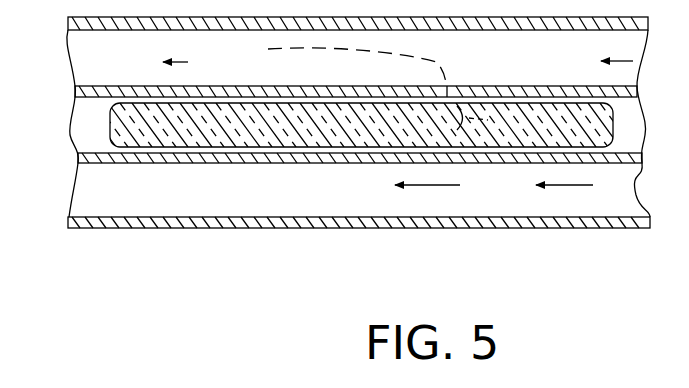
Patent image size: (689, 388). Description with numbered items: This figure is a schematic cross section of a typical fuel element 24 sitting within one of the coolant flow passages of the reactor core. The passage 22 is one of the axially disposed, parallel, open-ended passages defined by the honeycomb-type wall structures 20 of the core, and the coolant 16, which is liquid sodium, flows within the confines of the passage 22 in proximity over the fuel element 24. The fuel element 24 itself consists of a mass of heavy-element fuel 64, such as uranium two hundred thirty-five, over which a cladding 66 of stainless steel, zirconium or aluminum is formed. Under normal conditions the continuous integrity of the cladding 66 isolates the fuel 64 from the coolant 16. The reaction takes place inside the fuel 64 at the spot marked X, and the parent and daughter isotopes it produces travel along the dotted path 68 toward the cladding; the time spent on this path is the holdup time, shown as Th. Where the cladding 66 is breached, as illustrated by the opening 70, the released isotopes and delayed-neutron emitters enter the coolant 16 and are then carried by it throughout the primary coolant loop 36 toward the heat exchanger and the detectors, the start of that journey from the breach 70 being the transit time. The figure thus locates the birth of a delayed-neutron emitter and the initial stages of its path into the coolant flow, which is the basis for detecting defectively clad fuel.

The coolant 16 is at (576, 71).
The honeycomb-type wall structure 20 is at (188, 228).
The passage 22 is at (355, 199).
The fuel element 24 is at (93, 78).
The primary coolant loop 36 is at (157, 61).
The fuel 64 is at (165, 125).
The cladding 66 is at (280, 161).
The dotted path 68 is at (306, 54).
The opening 70 is at (451, 86).